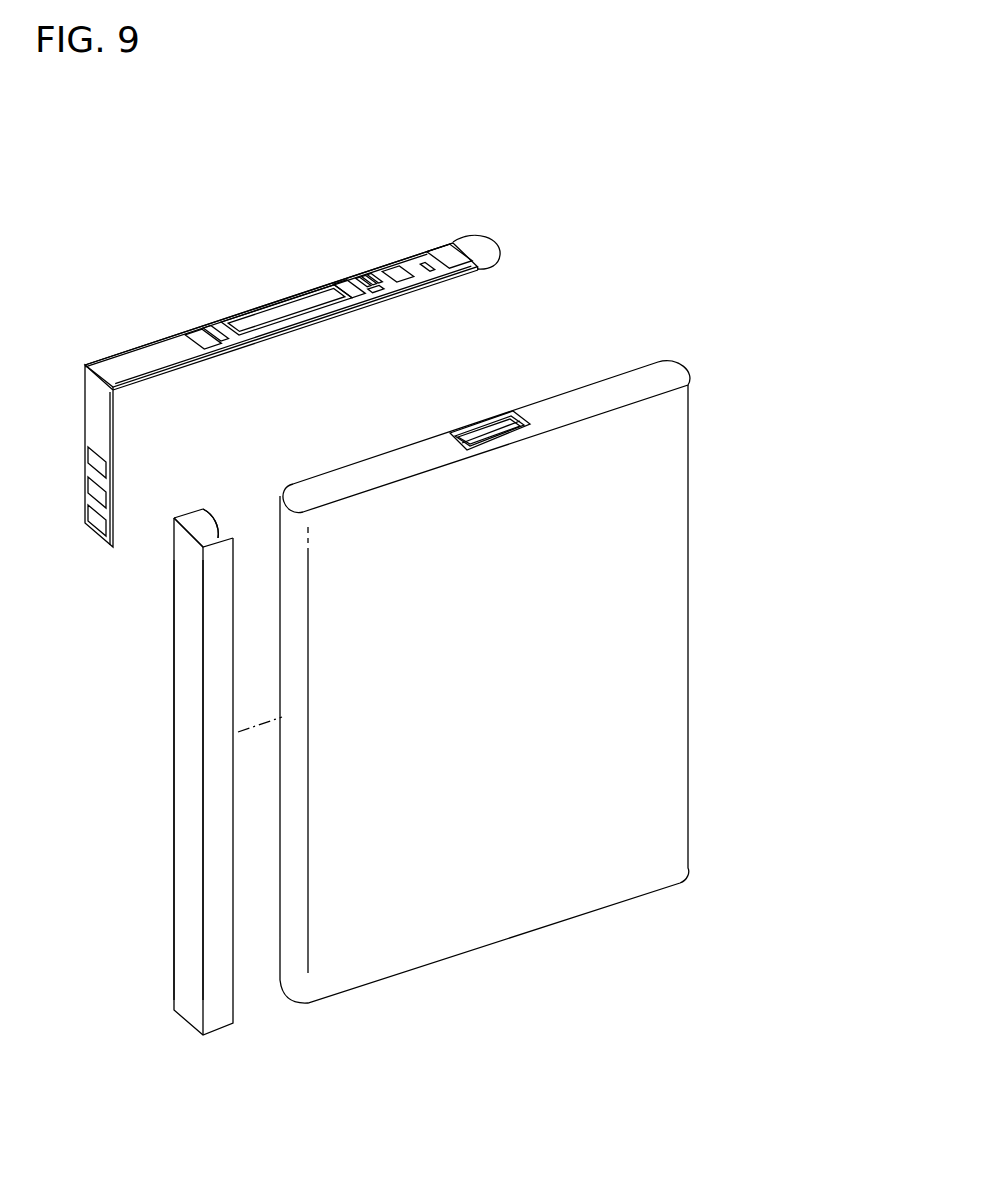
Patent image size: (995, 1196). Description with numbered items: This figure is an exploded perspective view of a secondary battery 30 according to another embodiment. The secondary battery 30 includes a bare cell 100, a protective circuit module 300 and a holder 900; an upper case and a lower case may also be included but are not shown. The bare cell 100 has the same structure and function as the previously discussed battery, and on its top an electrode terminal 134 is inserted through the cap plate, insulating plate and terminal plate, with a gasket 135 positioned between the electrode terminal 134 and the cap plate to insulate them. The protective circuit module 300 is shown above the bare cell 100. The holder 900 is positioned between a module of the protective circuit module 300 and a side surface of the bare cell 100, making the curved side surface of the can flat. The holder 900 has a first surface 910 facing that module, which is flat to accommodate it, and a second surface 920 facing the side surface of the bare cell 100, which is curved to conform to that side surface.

The secondary battery 30 is at (238, 224).
The protective circuit module 300 is at (182, 312).
The bare cell 100 is at (714, 465).
The electrode terminal 134 is at (483, 428).
The gasket 135 is at (521, 412).
The holder 900 is at (158, 746).
The first surface 910 is at (185, 812).
The second surface 920 is at (221, 536).